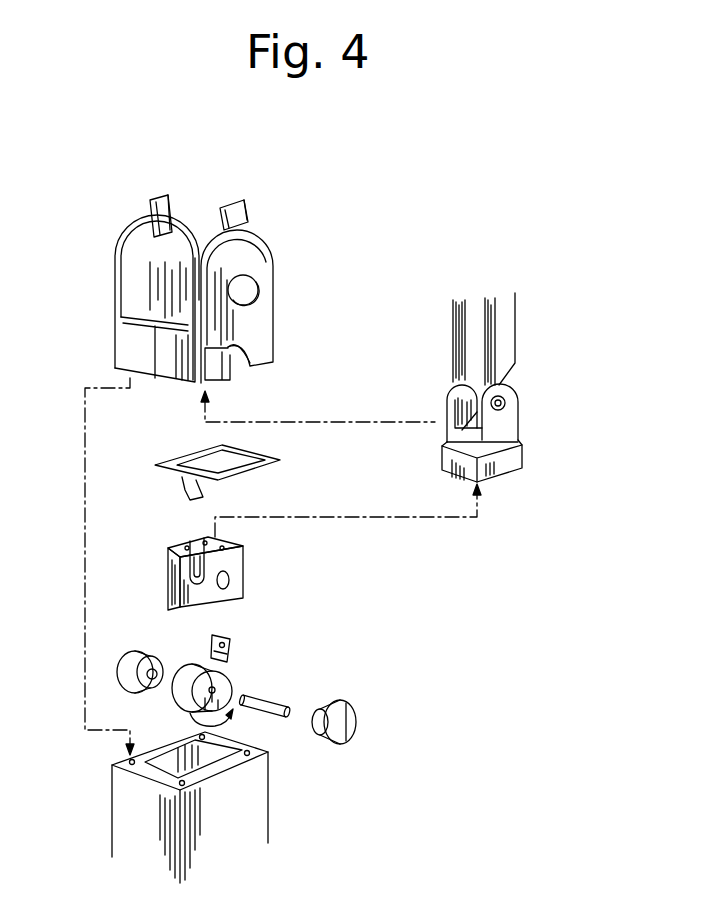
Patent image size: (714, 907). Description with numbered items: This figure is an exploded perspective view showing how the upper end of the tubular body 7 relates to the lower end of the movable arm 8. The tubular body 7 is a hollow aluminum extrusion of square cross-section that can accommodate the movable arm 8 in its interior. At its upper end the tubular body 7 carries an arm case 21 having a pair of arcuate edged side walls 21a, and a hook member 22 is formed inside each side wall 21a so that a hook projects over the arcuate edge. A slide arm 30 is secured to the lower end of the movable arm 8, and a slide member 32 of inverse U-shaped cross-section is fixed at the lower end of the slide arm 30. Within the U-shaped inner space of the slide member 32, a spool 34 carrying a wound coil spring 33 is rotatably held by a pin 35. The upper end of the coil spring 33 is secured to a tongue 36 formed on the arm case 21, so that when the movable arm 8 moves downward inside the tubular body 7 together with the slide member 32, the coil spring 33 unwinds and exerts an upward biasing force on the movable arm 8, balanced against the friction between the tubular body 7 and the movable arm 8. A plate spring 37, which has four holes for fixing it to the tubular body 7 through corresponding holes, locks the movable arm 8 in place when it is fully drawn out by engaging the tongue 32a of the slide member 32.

The tubular body 7 is at (258, 813).
The movable arm 8 is at (512, 321).
The arm case 21 is at (216, 258).
The arcuate edged side wall 21a is at (112, 261).
The hook member 22 is at (147, 216).
The slide arm 30 is at (510, 428).
The slide member 32 is at (200, 573).
The tongue 32a is at (172, 563).
The coil spring 33 is at (228, 660).
The spool 34 is at (228, 684).
The pin 35 is at (280, 694).
The tongue 36 is at (237, 378).
The plate spring 37 is at (180, 477).